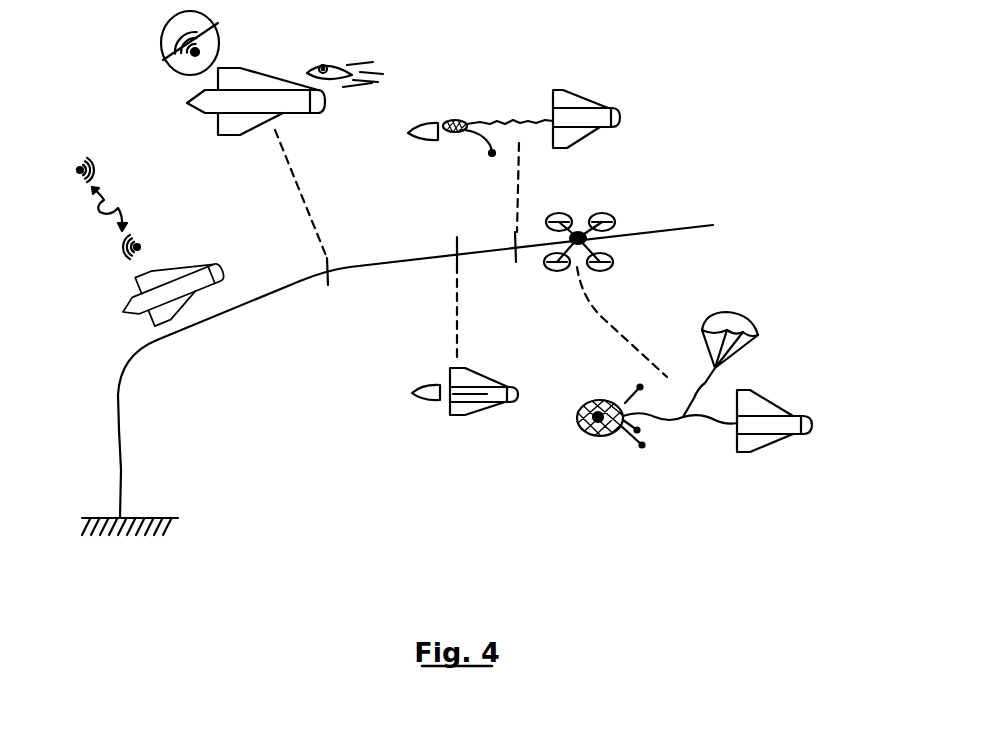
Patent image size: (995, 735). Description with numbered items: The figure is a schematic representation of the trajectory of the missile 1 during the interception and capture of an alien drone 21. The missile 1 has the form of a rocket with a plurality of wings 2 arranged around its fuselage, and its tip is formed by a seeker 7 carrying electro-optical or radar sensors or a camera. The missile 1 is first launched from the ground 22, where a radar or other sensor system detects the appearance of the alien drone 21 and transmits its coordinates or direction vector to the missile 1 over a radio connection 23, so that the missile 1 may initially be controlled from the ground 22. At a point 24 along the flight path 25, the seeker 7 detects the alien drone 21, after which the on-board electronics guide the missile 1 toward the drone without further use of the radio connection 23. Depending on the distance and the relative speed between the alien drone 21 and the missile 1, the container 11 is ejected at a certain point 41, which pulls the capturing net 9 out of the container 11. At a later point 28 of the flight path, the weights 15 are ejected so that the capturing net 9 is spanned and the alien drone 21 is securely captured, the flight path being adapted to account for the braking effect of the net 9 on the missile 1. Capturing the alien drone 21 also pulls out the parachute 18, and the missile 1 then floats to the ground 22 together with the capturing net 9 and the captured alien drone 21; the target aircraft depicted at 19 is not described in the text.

The missile 1 is at (186, 245).
The wings 2 is at (233, 125).
The seeker 7 is at (320, 105).
The capturing net 9 is at (453, 122).
The container 11 is at (428, 402).
The weights 15 is at (467, 120).
The parachute 18 is at (747, 315).
The target aircraft 19 is at (512, 120).
The alien drone 21 is at (629, 193).
The ground 22 is at (152, 517).
The radio connection 23 is at (102, 212).
The point 24 is at (340, 311).
The flight path 25 is at (200, 327).
The later point 28 is at (515, 233).
The certain point 41 is at (441, 250).